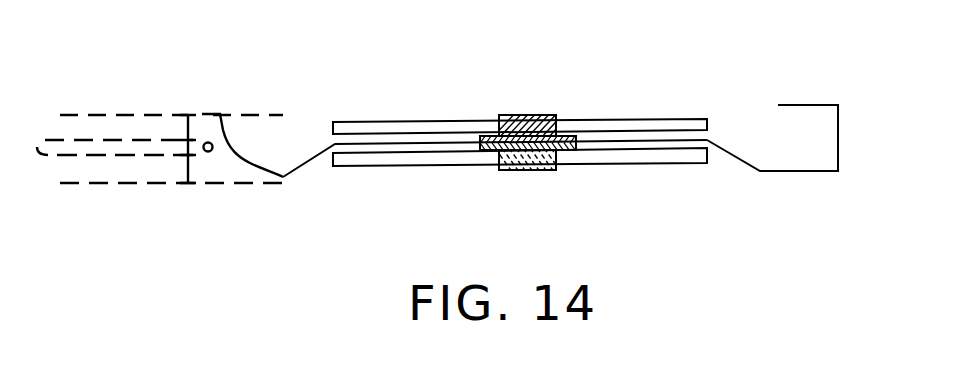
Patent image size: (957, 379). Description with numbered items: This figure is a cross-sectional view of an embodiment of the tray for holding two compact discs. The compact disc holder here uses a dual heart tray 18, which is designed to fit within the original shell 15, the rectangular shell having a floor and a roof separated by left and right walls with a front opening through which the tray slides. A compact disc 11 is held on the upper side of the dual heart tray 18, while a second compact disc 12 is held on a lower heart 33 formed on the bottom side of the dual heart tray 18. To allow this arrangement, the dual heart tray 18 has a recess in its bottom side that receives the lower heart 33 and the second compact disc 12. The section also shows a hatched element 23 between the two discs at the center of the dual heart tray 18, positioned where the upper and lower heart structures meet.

The compact disc 11 is at (640, 112).
The second compact disc 12 is at (648, 168).
The shell 15 is at (212, 112).
The dual heart tray 18 is at (813, 172).
The upper solder/bonding block 23 is at (519, 116).
The lower heart 33 is at (517, 170).